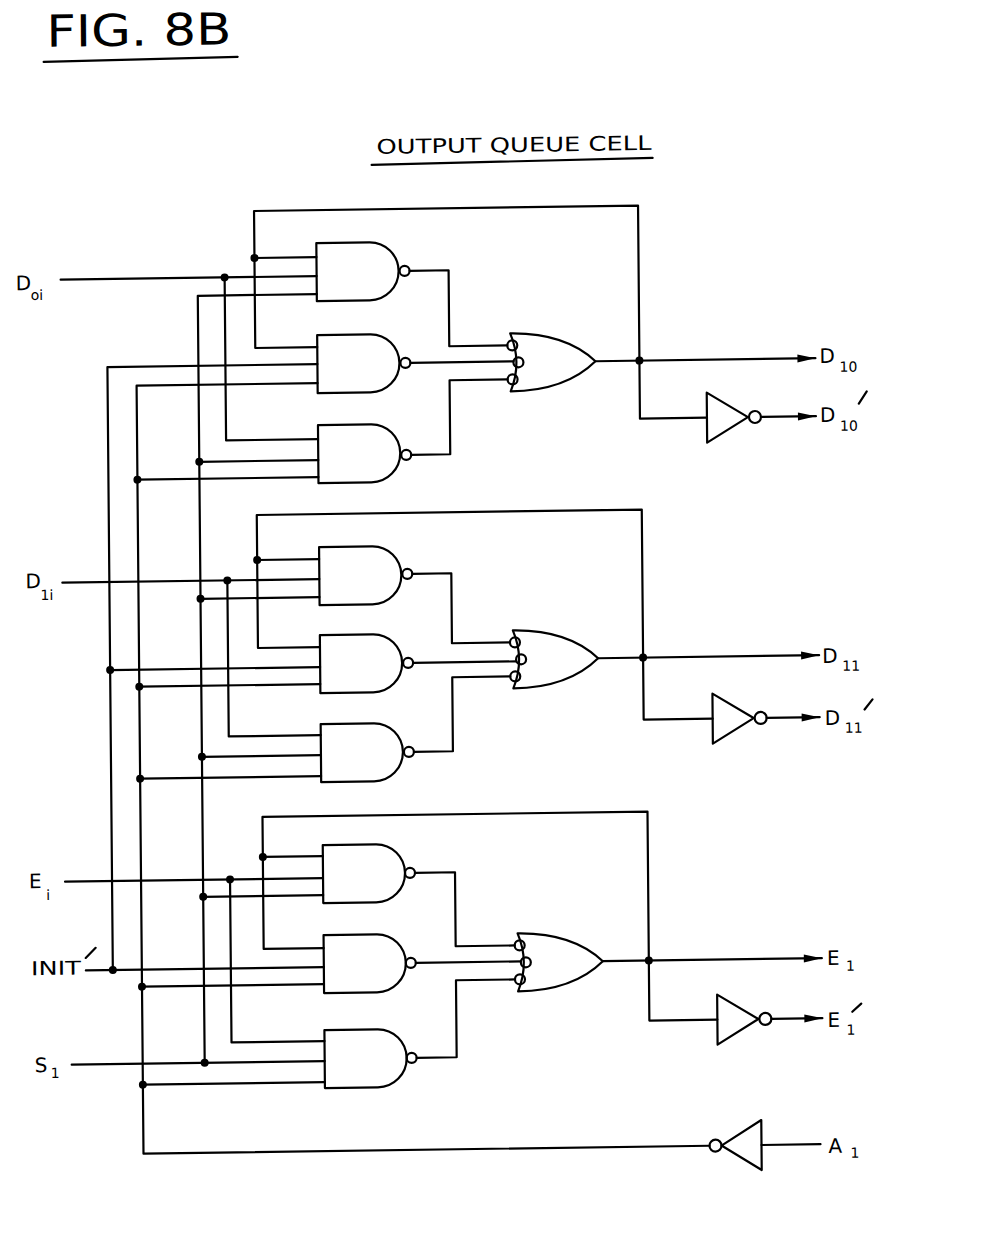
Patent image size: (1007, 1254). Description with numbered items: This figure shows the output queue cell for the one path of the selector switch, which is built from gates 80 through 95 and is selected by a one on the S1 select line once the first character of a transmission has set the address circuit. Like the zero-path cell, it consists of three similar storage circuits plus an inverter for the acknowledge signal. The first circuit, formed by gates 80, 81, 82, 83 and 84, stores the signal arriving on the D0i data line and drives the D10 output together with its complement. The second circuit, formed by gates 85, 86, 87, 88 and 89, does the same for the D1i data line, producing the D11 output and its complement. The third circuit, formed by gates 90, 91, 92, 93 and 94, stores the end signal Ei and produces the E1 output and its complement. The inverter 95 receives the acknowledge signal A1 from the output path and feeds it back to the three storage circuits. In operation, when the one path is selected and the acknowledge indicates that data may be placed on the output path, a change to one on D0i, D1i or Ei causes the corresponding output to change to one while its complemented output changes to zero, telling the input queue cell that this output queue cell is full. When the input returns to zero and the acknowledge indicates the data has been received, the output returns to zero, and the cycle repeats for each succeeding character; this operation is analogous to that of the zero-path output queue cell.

The gate 80 is at (407, 253).
The gate 81 is at (386, 392).
The gate 82 is at (398, 470).
The gate 83 is at (543, 394).
The gate 84 is at (730, 432).
The gate 85 is at (391, 546).
The gate 86 is at (386, 692).
The gate 87 is at (405, 762).
The gate 88 is at (553, 689).
The gate 89 is at (736, 738).
The gate 90 is at (397, 855).
The gate 91 is at (382, 992).
The gate 92 is at (402, 1078).
The gate 93 is at (552, 994).
The gate 94 is at (727, 1042).
The inverter 95 is at (745, 1172).